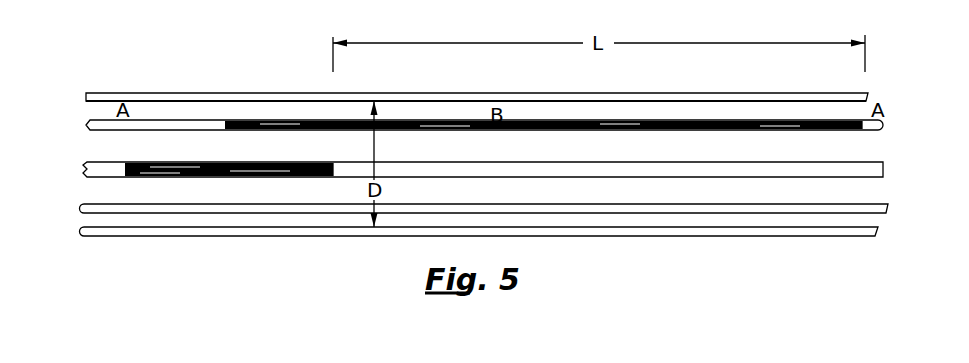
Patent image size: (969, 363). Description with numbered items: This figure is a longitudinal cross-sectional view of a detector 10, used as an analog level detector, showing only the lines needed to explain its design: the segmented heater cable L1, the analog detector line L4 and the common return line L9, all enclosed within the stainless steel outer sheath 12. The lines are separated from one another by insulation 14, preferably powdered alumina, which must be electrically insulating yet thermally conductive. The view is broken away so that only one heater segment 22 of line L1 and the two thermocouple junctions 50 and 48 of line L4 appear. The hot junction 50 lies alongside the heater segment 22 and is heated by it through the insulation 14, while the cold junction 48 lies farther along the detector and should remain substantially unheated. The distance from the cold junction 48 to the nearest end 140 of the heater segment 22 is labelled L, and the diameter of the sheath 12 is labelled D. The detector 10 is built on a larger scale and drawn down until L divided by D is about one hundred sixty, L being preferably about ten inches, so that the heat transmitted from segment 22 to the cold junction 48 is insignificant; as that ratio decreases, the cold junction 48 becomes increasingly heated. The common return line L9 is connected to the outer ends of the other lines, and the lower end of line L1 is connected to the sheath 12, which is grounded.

The boundary detector 10 is at (135, 88).
The outer sheath 12 is at (147, 93).
The insulation 14 is at (455, 110).
The heater segment 22 is at (172, 172).
The cold thermocouple junction 48 is at (862, 124).
The hot thermocouple junction 50 is at (225, 120).
The nearest end of the heater segment 140 is at (334, 176).
The segmented heater cable L1 is at (461, 214).
The analog detector line L4 is at (458, 111).
The common return line L9 is at (97, 213).